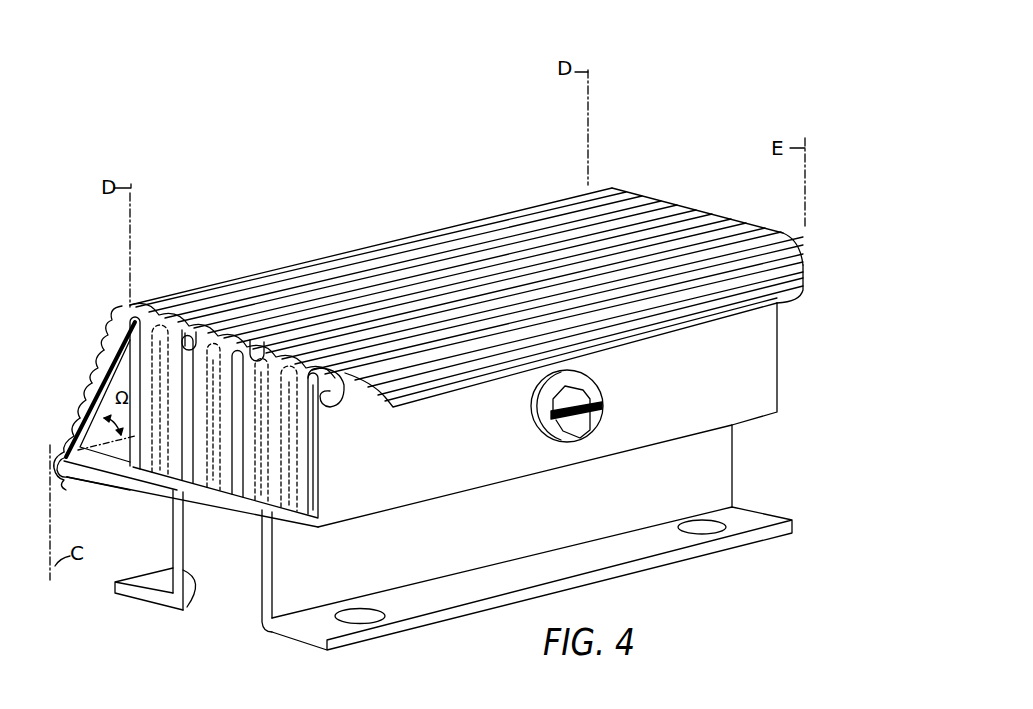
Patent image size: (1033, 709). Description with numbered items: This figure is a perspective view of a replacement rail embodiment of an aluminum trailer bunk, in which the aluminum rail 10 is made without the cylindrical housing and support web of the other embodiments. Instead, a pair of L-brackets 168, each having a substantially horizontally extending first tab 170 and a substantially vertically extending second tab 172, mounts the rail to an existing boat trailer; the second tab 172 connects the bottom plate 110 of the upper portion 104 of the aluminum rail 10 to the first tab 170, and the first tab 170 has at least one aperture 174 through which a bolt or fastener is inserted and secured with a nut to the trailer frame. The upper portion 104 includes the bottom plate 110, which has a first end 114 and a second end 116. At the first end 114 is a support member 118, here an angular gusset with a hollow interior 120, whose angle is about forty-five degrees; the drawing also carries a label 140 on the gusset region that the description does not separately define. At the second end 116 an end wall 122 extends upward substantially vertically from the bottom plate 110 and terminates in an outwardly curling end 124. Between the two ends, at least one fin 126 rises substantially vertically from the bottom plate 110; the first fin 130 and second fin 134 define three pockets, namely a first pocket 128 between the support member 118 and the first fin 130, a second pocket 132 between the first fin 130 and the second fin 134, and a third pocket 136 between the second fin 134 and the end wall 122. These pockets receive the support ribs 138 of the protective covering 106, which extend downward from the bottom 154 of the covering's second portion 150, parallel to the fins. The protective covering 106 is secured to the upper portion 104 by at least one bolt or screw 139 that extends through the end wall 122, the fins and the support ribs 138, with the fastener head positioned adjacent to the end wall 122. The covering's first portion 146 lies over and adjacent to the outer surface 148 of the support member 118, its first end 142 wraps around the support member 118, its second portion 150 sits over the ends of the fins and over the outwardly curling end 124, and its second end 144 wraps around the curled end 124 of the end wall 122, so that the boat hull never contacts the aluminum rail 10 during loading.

The aluminum rail 10 is at (160, 262).
The upper portion 104 is at (777, 363).
The protective covering 106 is at (572, 197).
The bottom plate 110 is at (150, 490).
The first end 114 is at (56, 480).
The second end 116 is at (318, 505).
The support member 118 is at (84, 400).
The hollow interior 120 is at (70, 430).
The end wall 122 is at (778, 315).
The outwardly curling end 124 is at (348, 408).
The fin 126 is at (190, 330).
The first pocket 128 is at (130, 308).
The first fin 130 is at (200, 470).
The second pocket 132 is at (207, 360).
The second fin 134 is at (257, 352).
The third pocket 136 is at (286, 495).
The support ribs 138 is at (165, 495).
The bolt or screw 139 is at (596, 401).
The clamp bend 140 is at (95, 380).
The first end 142 is at (80, 480).
The second end 144 is at (805, 268).
The first portion 146 is at (108, 345).
The outer surface 148 is at (56, 458).
The second portion 150 is at (536, 207).
The bottom 154 is at (393, 407).
The L-brackets 168 is at (732, 472).
The first tab 170 is at (412, 630).
The second tab 172 is at (186, 605).
The aperture 174 is at (360, 608).